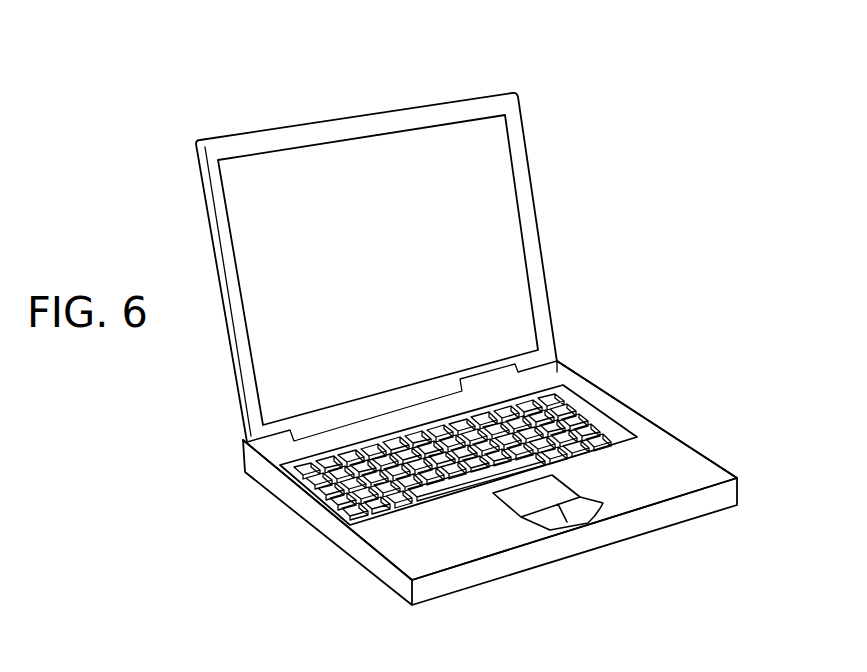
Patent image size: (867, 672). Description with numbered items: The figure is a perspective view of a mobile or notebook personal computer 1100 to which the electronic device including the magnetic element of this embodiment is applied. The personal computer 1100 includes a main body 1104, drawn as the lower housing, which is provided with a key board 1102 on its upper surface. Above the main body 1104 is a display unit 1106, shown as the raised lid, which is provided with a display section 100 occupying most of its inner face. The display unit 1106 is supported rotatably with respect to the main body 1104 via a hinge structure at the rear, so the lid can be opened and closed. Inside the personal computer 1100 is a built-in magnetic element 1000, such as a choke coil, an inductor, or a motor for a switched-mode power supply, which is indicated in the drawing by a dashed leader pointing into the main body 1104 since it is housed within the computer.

The display section 100 is at (370, 170).
The personal computer 1100 is at (560, 82).
The display unit 1106 is at (541, 215).
The key board 1102 is at (593, 412).
The main body 1104 is at (476, 540).
The magnetic element 1000 is at (652, 455).